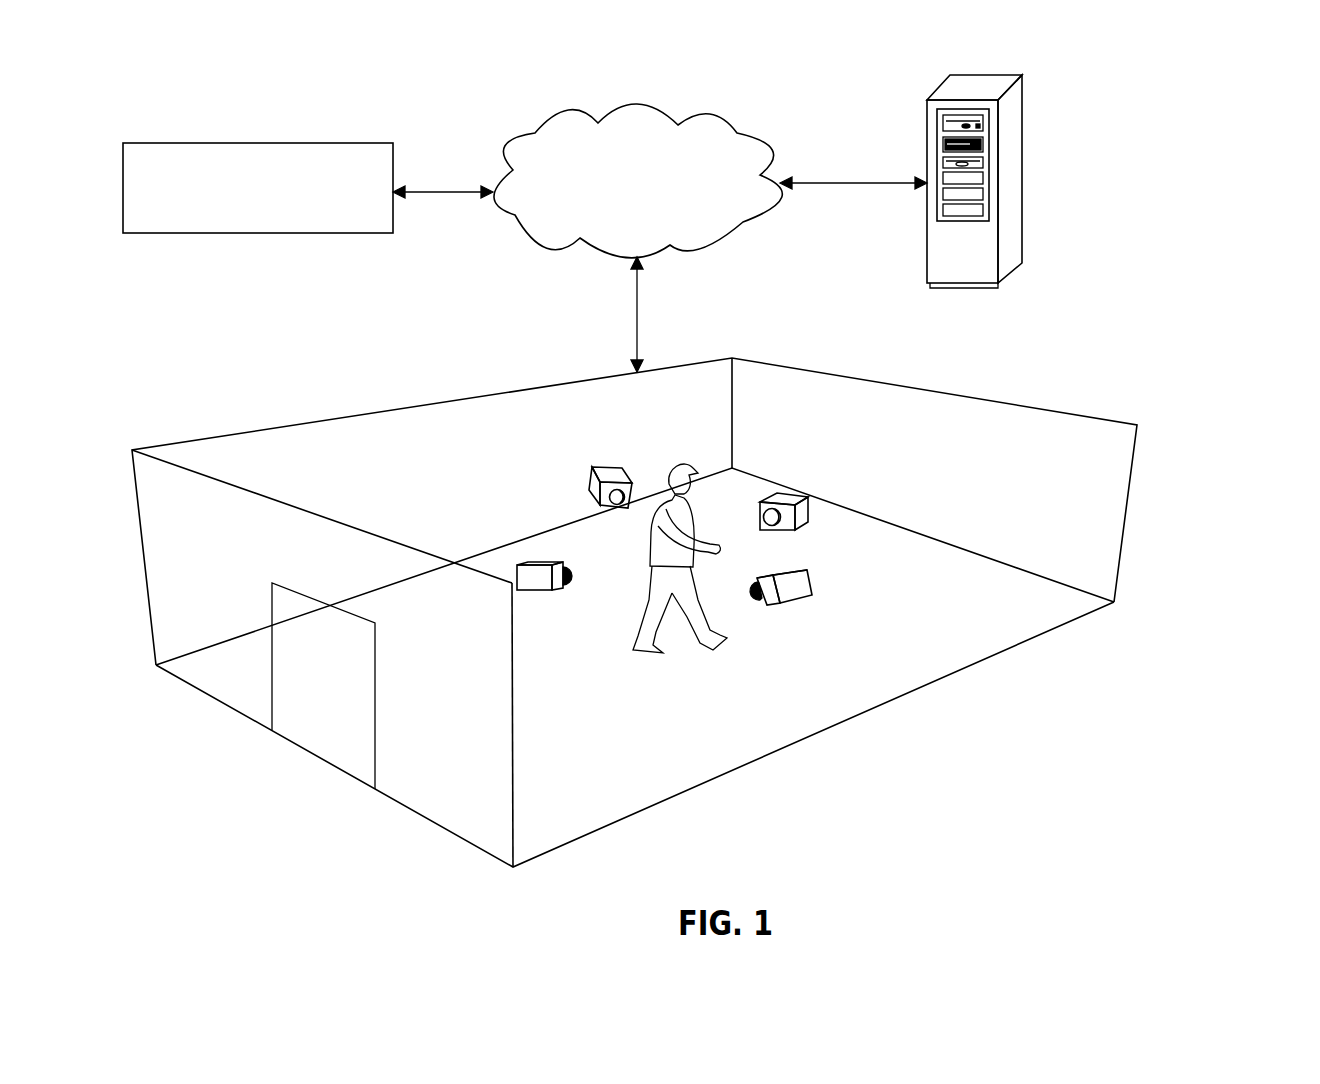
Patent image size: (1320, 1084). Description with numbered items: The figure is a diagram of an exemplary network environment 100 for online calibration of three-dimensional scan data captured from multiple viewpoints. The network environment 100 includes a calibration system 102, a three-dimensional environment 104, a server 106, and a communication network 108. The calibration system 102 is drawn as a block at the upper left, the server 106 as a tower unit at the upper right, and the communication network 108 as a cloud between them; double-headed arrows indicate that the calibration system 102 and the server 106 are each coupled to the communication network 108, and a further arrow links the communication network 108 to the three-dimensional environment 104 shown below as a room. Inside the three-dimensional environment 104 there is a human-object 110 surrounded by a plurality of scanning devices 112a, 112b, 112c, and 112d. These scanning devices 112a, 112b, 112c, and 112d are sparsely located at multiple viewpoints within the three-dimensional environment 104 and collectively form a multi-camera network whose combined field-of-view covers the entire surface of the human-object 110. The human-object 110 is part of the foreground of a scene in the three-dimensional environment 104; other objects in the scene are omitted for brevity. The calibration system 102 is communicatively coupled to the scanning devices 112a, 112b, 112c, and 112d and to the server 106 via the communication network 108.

The network environment 100 is at (1220, 105).
The calibration system 102 is at (373, 201).
The 3D environment 104 is at (1098, 513).
The server 106 is at (1012, 168).
The communication network 108 is at (700, 209).
The human-object 110 is at (682, 465).
The scanning device 112a is at (797, 495).
The scanning device 112b is at (782, 607).
The scanning device 112c is at (613, 467).
The scanning device 112d is at (517, 575).